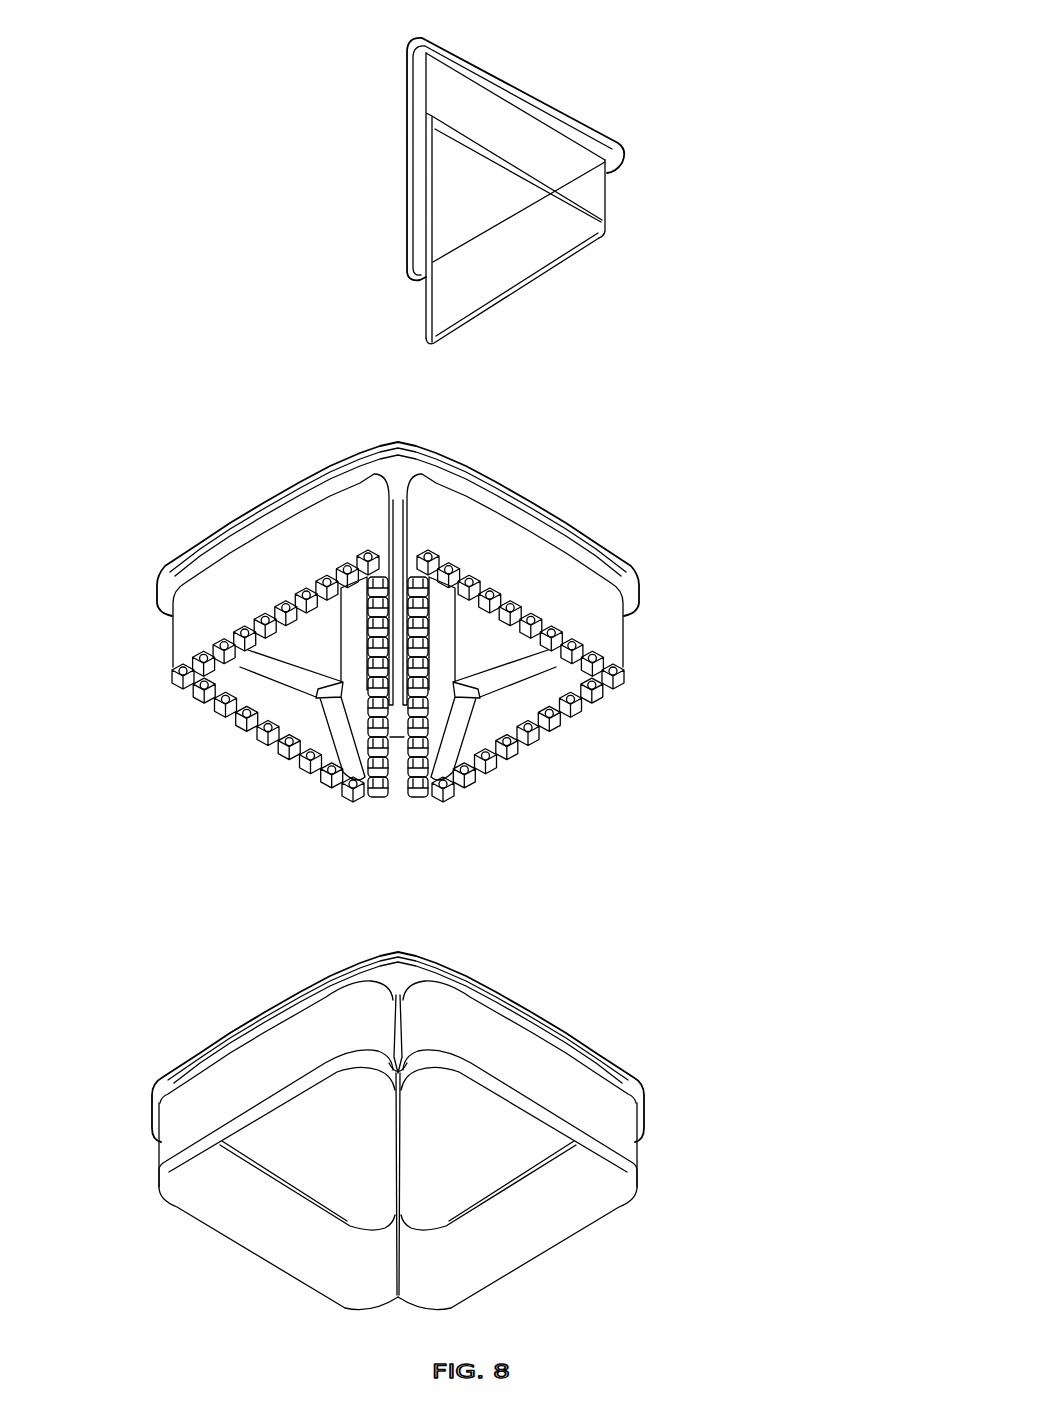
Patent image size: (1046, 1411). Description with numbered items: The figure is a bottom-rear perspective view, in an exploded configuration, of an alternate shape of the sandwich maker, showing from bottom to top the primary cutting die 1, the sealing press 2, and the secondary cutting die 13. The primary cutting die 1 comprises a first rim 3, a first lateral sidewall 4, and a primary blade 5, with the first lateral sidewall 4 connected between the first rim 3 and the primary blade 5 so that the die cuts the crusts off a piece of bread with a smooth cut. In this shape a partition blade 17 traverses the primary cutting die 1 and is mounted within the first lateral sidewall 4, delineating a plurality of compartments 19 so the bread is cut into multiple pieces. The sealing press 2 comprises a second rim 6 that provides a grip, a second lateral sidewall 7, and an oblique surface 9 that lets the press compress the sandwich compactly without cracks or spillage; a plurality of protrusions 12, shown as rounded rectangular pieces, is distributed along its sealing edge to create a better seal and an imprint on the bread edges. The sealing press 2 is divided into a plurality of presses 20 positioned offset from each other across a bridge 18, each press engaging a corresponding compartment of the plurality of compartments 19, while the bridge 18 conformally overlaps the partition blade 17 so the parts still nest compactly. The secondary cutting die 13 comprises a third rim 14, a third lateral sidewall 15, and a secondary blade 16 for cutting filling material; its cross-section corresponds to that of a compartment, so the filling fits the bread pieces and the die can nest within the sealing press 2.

The primary cutting die 1 is at (747, 810).
The sealing press 2 is at (747, 392).
The first rim 3 is at (651, 1100).
The first lateral sidewall 4 is at (627, 1148).
The primary blade 5 is at (483, 1077).
The second rim 6 is at (634, 601).
The second lateral sidewall 7 is at (605, 638).
The oblique surface 9 is at (450, 627).
The plurality of protrusions 12 is at (190, 683).
The secondary cutting die 13 is at (747, 18).
The third rim 14 is at (611, 166).
The third lateral sidewall 15 is at (600, 200).
The secondary blade 16 is at (493, 297).
The partition blade 17 is at (395, 1157).
The bridge 18 is at (397, 738).
The plurality of compartments 19 is at (245, 1163).
The plurality of presses 20 is at (266, 716).